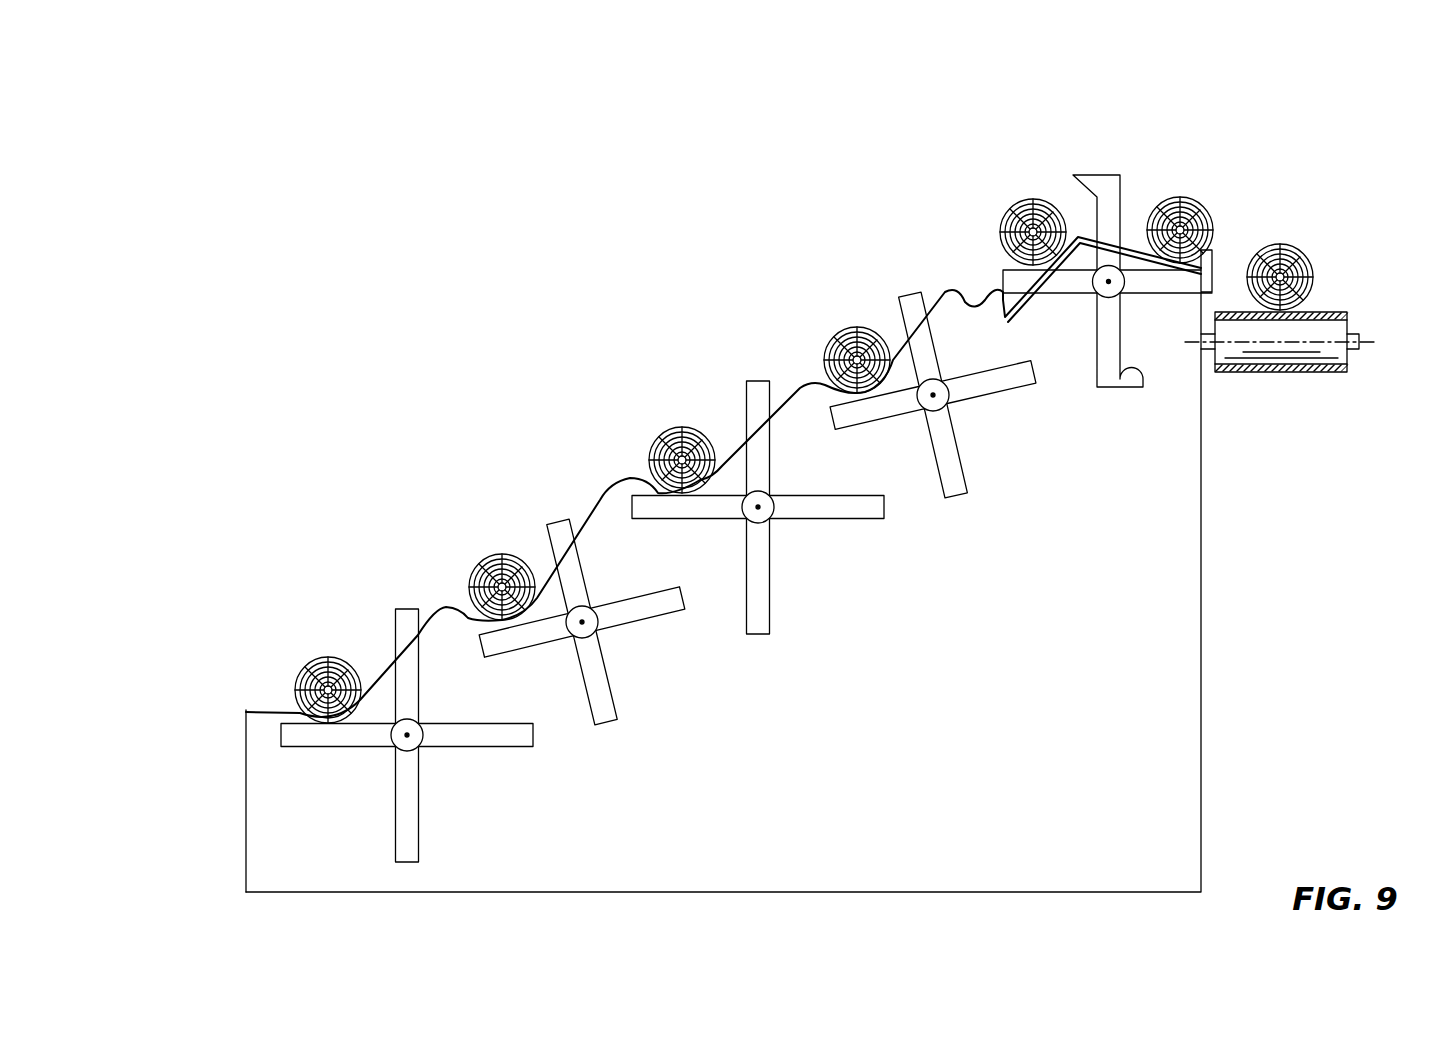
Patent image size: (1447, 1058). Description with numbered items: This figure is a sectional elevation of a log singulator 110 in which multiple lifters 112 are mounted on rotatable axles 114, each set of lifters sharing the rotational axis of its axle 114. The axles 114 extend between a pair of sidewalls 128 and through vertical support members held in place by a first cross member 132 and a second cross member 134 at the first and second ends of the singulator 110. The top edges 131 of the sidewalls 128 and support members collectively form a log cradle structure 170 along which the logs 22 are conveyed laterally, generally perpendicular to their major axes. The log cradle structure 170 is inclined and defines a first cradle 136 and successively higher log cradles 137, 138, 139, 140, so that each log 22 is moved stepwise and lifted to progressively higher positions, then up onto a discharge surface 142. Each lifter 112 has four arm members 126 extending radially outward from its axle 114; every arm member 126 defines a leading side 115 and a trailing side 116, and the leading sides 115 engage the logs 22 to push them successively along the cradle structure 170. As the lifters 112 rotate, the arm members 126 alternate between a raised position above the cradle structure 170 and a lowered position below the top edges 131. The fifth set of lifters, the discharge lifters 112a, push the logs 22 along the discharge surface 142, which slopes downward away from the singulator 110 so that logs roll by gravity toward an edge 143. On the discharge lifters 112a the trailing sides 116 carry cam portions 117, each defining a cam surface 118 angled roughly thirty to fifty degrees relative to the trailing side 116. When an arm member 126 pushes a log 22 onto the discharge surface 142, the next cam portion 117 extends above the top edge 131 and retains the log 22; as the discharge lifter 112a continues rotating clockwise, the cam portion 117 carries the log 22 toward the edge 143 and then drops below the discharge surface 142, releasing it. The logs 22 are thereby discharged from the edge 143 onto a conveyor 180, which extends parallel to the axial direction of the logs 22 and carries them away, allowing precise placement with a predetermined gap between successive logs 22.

The log 22 is at (313, 660).
The log singulator 110 is at (508, 258).
The lifter 112 is at (408, 865).
The discharge lifter 112a is at (1113, 337).
The rotatable axle 114 is at (395, 748).
The leading side 115 is at (395, 790).
The trailing side 116 is at (420, 798).
The cam portion 117 is at (1043, 152).
The cam surface 118 is at (1080, 190).
The arm member 126 is at (570, 680).
The sidewall 128 is at (1110, 640).
The top edge 131 is at (605, 483).
The first cross member 132 is at (246, 833).
The second cross member 134 is at (1212, 757).
The first cradle 136 is at (305, 718).
The log cradle 137 is at (460, 605).
The log cradle 138 is at (495, 490).
The log cradle 139 is at (680, 372).
The log cradle 140 is at (853, 258).
The discharge surface 142 is at (1195, 195).
The edge 143 is at (1205, 275).
The log cradle structure 170 is at (246, 688).
The conveyor 180 is at (1359, 350).